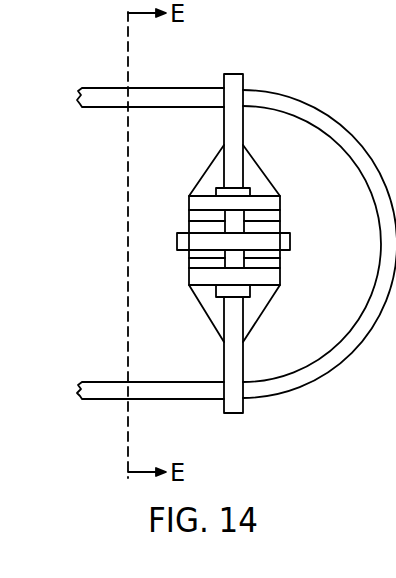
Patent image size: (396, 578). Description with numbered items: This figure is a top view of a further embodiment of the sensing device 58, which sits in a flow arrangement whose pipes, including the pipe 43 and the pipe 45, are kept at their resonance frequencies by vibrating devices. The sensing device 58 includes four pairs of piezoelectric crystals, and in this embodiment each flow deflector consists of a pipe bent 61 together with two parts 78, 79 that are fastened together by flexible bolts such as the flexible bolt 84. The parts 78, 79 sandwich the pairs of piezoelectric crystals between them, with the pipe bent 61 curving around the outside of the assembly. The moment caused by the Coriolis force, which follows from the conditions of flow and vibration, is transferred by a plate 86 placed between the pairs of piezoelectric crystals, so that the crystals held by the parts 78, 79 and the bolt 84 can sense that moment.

The pipe 43 is at (106, 400).
The pipe 45 is at (108, 88).
The sensing device 58 is at (283, 304).
The pipe bent 61 is at (307, 385).
The part 78 is at (231, 74).
The part 79 is at (232, 413).
The flexible bolt 84 is at (228, 263).
The plate 86 is at (290, 241).